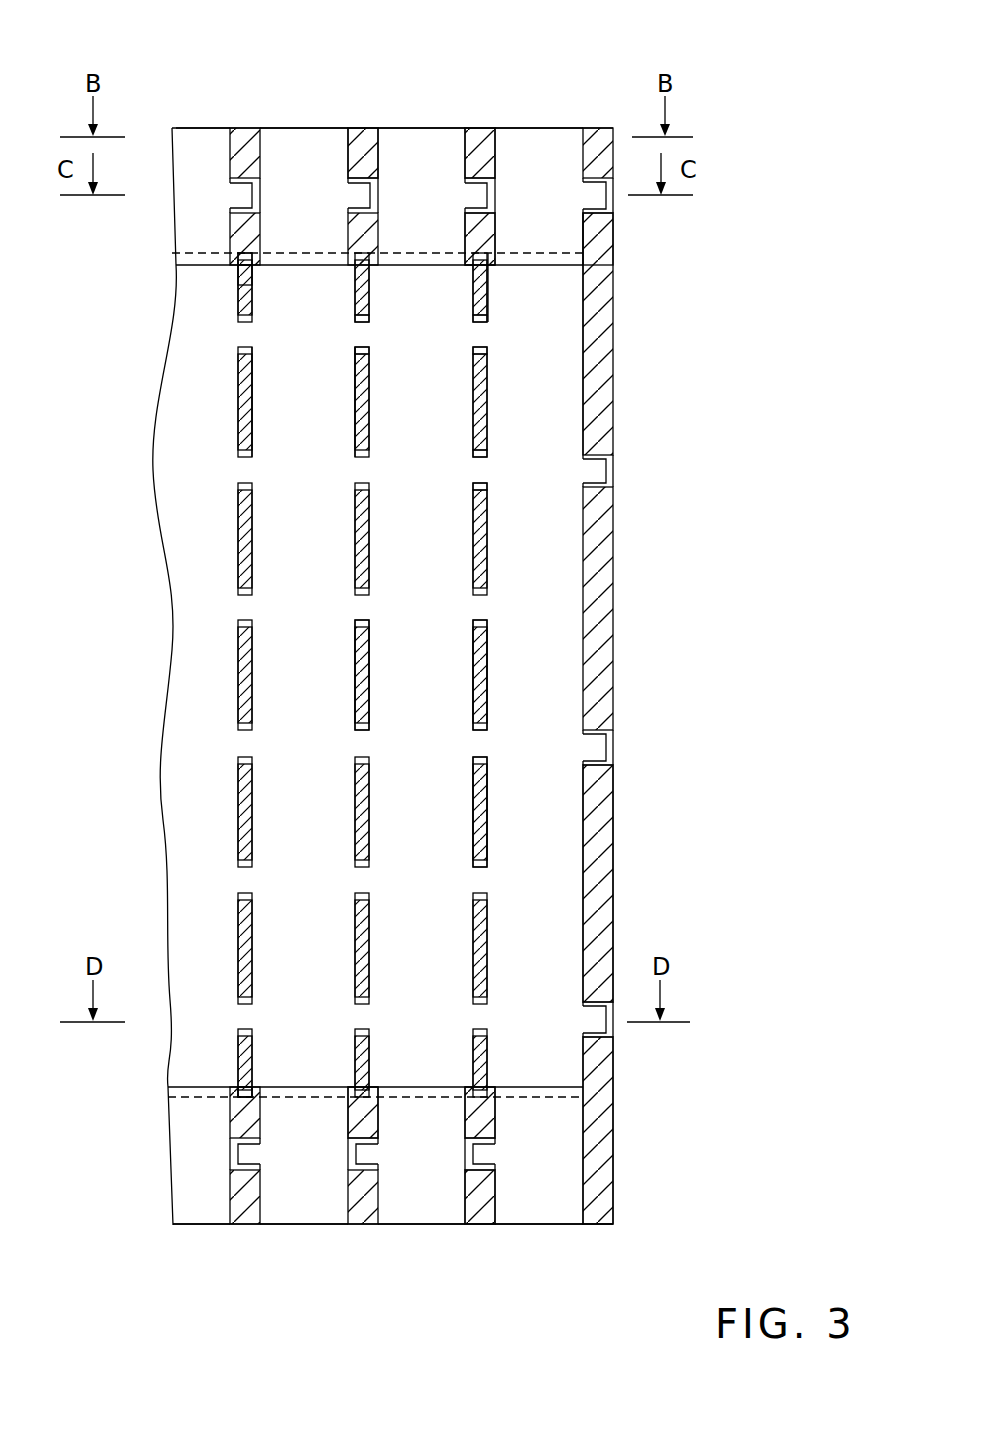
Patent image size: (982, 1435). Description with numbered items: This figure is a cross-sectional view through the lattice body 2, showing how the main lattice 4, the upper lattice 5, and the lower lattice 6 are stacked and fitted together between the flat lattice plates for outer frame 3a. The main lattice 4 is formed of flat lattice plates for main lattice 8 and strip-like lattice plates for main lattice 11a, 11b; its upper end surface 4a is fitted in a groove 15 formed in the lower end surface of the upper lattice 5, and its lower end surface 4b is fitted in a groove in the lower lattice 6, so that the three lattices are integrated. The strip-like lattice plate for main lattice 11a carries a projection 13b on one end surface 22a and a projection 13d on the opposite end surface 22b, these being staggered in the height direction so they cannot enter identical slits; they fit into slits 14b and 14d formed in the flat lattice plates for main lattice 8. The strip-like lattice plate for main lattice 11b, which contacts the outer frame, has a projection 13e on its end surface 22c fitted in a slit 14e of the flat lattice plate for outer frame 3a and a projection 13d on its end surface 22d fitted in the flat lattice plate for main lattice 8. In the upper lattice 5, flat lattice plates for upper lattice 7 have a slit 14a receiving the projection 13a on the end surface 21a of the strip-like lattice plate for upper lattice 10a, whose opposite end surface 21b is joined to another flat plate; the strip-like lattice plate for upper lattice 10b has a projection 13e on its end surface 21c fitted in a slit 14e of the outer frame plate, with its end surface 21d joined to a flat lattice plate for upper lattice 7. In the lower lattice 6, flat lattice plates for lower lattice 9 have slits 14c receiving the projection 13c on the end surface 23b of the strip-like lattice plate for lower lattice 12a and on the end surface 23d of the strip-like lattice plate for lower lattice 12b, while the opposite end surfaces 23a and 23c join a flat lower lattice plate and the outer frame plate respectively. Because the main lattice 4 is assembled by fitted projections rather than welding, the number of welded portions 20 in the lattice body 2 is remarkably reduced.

The lattice body 2 is at (460, 98).
The flat lattice plate for outer frame 3a is at (613, 374).
The main lattice 4 is at (130, 684).
The upper end surface of the main lattice 4a is at (248, 255).
The lower end surface of the main lattice 4b is at (243, 1108).
The upper lattice 5 is at (205, 210).
The lower lattice 6 is at (130, 1154).
The flat lattice plate for upper lattice 7 is at (492, 138).
The flat lattice plate for main lattice 8 is at (486, 651).
The flat lattice plate for lower lattice 9 is at (485, 1267).
The strip-like lattice plate for upper lattice 10a is at (414, 142).
The strip-like lattice plate for upper lattice 10b is at (537, 140).
The strip-like lattice plate for main lattice 11a is at (410, 540).
The strip-like lattice plate for main lattice 11b is at (515, 345).
The strip-like lattice plate for lower lattice 12a is at (423, 1267).
The strip-like lattice plate for lower lattice 12b is at (532, 1227).
The projection 13a is at (483, 190).
The projection 13b is at (481, 473).
The projection 13c is at (480, 1158).
The projection 13d is at (483, 328).
The projection 13e is at (601, 462).
The slit 14a is at (483, 210).
The slit 14b is at (484, 506).
The slit 14c is at (484, 1142).
The slit 14d is at (483, 366).
The slit 14e is at (613, 482).
The groove 15 is at (235, 274).
The welded portion 20 is at (243, 1094).
The end surface 21a is at (483, 241).
The end surface 21b is at (350, 154).
The end surface 21c is at (600, 241).
The end surface 21d is at (467, 154).
The end surface 22a is at (486, 822).
The end surface 22b is at (355, 711).
The end surface 22c is at (588, 796).
The end surface 22d is at (472, 711).
The end surface 23a is at (483, 1192).
The end surface 23b is at (352, 1114).
The end surface 23c is at (590, 1160).
The end surface 23d is at (470, 1114).